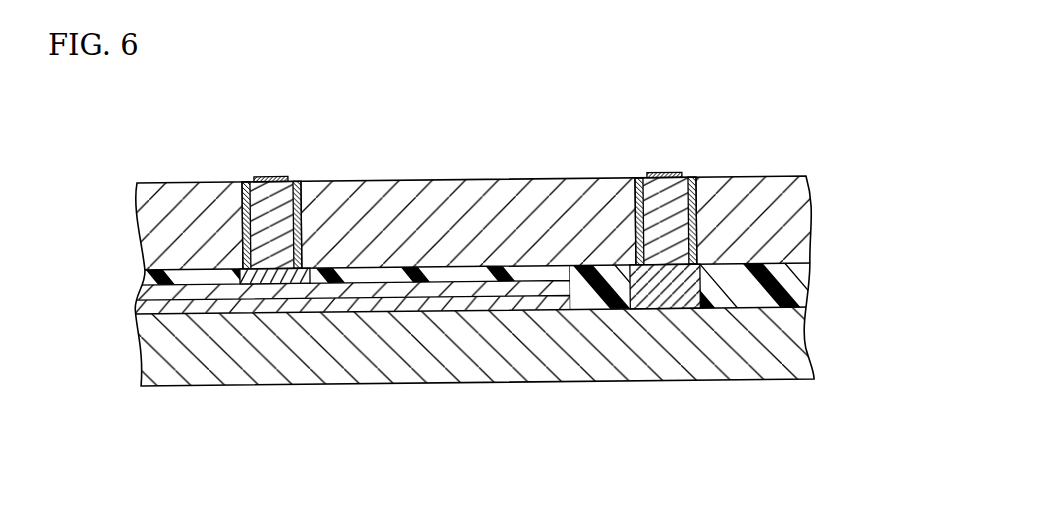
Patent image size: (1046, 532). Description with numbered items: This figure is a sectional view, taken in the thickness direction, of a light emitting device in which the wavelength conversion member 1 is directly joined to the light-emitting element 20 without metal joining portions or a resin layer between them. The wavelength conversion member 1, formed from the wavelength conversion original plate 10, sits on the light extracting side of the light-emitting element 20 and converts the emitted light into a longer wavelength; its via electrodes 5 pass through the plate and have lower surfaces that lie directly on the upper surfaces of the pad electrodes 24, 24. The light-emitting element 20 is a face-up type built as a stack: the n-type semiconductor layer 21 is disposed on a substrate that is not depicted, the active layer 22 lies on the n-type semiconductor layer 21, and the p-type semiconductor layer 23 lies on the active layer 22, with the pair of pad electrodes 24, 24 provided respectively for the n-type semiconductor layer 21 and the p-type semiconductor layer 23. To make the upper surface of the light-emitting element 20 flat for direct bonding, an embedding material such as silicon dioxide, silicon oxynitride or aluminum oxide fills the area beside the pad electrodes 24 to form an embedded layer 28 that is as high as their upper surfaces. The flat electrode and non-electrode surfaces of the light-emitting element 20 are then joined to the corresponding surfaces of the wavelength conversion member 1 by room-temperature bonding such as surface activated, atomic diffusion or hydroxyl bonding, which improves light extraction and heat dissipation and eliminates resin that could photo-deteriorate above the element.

The wavelength conversion member 1 is at (494, 134).
The via electrode 5 is at (277, 177).
The wavelength conversion original plate 10 is at (745, 178).
The light-emitting element 20 is at (418, 408).
The n-type semiconductor layer 21 is at (163, 347).
The active layer 22 is at (150, 308).
The p-type semiconductor layer 23 is at (150, 289).
The pad electrode 24 is at (273, 280).
The embedded layer 28 is at (795, 285).